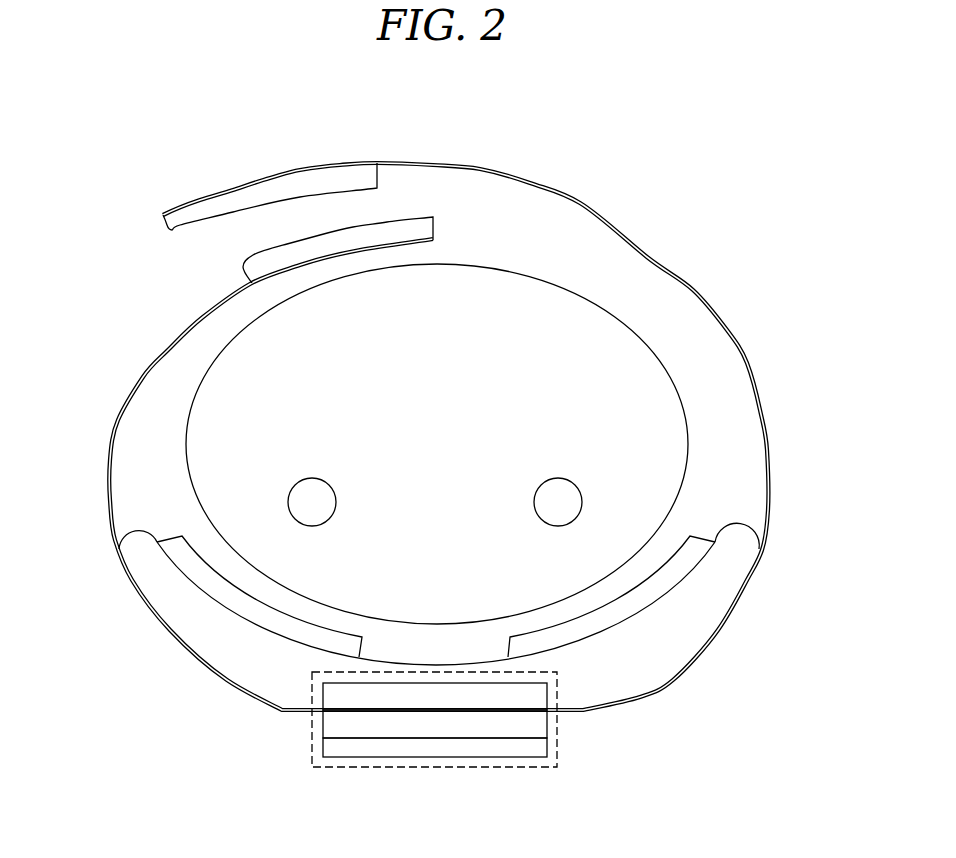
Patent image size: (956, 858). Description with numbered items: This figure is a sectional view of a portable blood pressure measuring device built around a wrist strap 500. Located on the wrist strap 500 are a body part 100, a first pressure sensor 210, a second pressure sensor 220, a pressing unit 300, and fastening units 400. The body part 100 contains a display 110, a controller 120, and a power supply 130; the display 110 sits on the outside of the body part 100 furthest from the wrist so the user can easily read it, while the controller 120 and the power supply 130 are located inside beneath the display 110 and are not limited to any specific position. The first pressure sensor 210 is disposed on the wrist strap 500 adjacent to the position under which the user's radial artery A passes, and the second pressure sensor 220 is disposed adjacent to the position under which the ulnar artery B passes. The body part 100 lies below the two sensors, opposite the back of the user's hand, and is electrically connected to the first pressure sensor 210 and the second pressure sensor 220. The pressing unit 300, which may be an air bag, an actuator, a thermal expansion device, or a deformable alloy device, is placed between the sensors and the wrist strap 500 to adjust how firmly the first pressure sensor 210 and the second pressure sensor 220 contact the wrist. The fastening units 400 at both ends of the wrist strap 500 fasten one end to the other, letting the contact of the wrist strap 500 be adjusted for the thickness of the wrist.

The body part 100 is at (482, 767).
The display 110 is at (547, 747).
The controller 120 is at (547, 725).
The power supply 130 is at (547, 697).
The first pressure sensor 210 is at (668, 578).
The second pressure sensor 220 is at (200, 580).
The pressing unit 300 is at (653, 658).
The fastening unit 400 is at (393, 233).
The wrist strap 500 is at (587, 208).
The radial artery A is at (310, 476).
The ulnar artery B is at (559, 477).